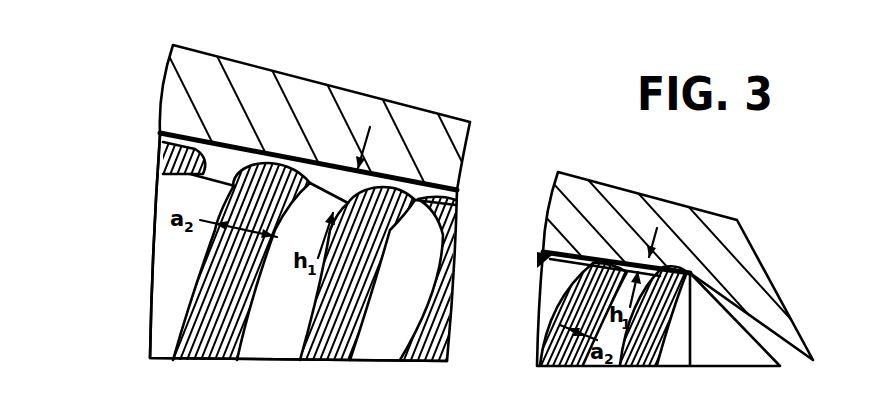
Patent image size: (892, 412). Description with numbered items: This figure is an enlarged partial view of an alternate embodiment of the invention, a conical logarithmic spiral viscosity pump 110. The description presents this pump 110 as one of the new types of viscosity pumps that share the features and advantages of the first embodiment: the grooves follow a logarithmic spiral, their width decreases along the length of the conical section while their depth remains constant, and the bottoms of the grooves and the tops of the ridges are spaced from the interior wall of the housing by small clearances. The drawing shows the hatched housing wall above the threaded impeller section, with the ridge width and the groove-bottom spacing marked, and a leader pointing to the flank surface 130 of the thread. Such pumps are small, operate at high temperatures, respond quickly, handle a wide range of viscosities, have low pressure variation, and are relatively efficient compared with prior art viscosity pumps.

The pump 110 is at (128, 97).
The thread flank surface 130 is at (390, 343).